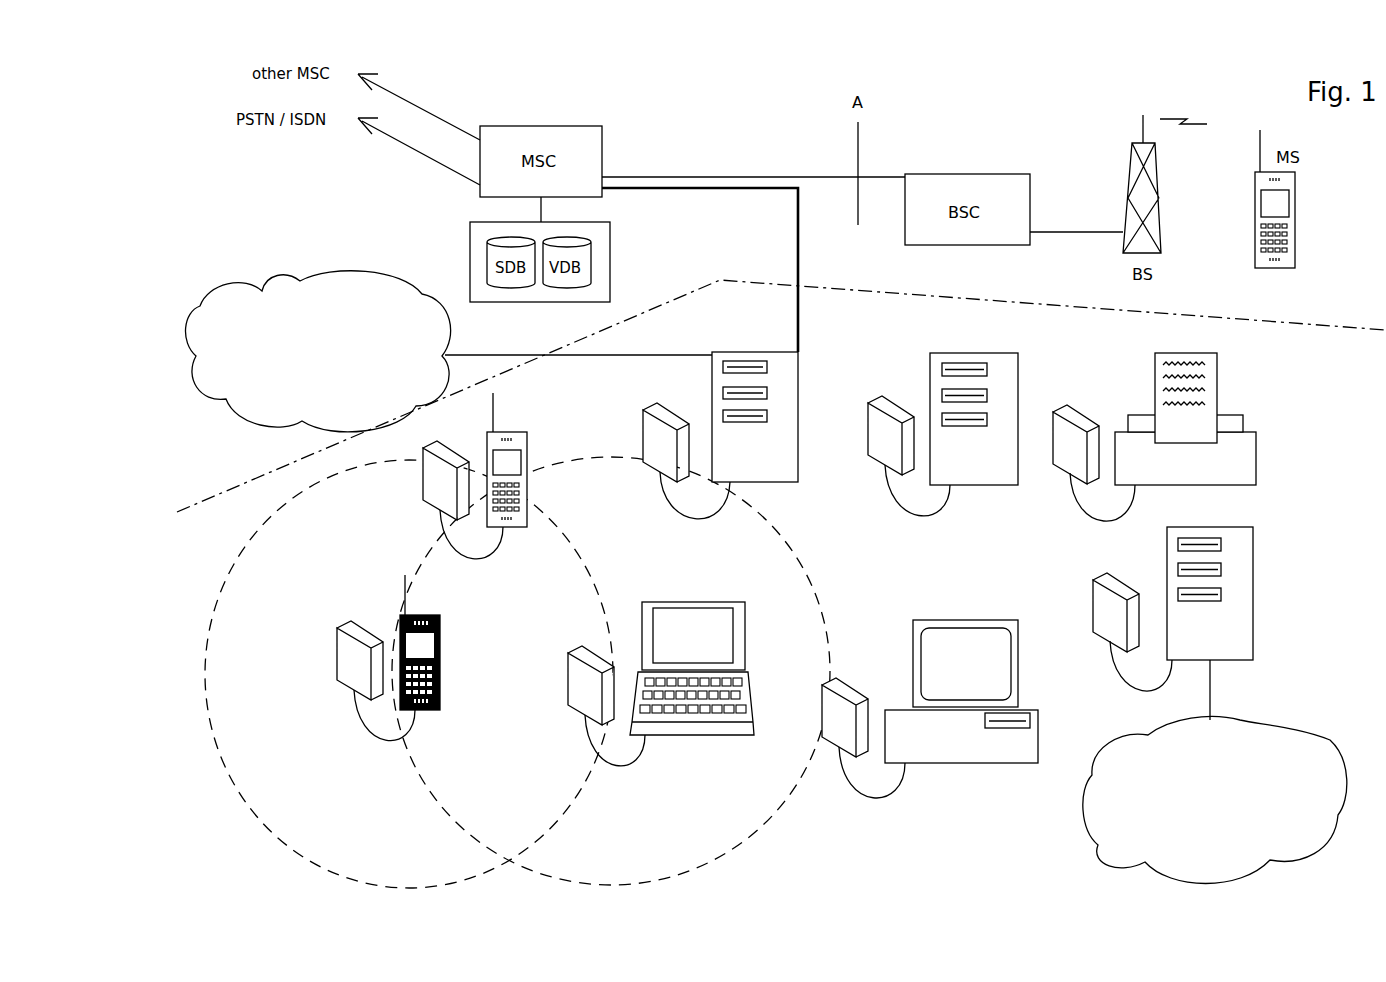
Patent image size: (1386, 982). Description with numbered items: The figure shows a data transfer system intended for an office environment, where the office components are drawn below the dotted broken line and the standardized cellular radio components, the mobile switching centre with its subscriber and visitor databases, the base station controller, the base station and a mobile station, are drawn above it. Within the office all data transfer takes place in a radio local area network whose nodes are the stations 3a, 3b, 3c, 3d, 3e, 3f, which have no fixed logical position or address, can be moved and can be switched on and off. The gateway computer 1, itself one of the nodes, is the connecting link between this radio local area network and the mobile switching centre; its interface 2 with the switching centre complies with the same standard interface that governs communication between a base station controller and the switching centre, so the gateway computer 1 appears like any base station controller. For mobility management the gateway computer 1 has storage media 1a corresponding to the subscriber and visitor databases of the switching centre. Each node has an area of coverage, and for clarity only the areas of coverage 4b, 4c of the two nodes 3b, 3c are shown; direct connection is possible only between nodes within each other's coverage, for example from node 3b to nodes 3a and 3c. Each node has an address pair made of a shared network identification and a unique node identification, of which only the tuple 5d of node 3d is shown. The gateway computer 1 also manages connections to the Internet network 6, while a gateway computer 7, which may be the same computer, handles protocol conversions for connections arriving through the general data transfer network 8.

The gateway computer 1 is at (741, 435).
The storage media 1a is at (728, 398).
The interface 2 is at (840, 328).
The station 3a is at (529, 443).
The station 3b is at (440, 643).
The station 3c is at (706, 602).
The station 3d is at (930, 709).
The station 3e is at (943, 434).
The station 3f is at (1154, 437).
The area of coverage 4b is at (246, 546).
The area of coverage 4c is at (797, 548).
The tuple 5d is at (998, 795).
The Internet network 6 is at (243, 285).
The gateway computer 7 is at (1173, 609).
The general data transfer network 8 is at (1258, 718).